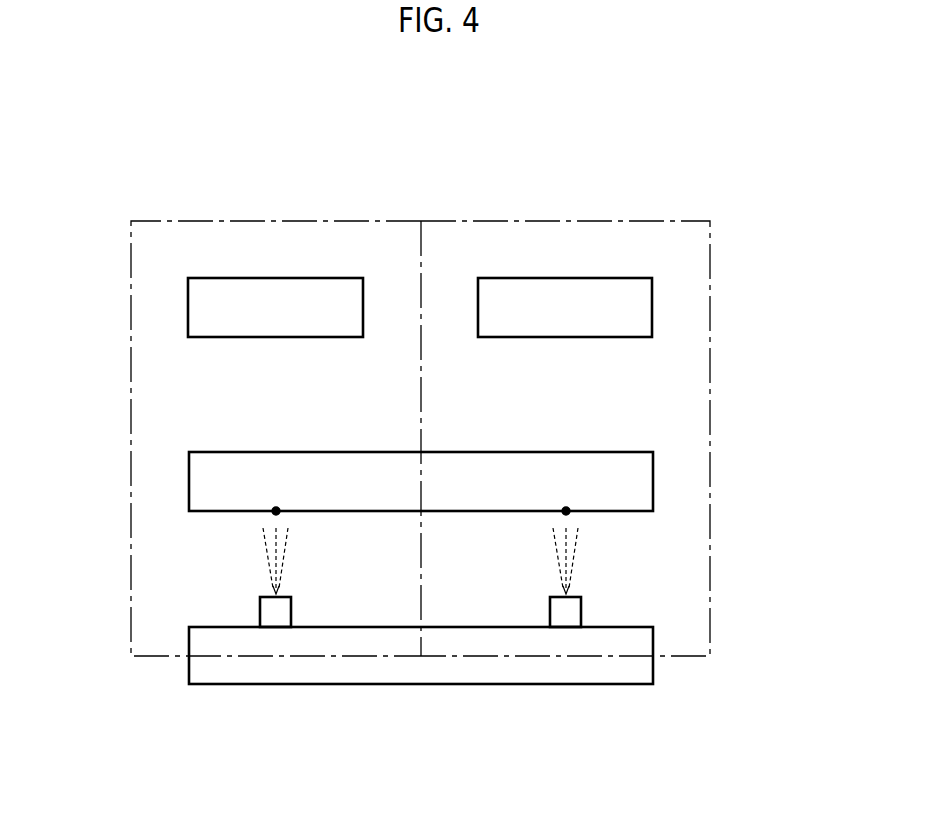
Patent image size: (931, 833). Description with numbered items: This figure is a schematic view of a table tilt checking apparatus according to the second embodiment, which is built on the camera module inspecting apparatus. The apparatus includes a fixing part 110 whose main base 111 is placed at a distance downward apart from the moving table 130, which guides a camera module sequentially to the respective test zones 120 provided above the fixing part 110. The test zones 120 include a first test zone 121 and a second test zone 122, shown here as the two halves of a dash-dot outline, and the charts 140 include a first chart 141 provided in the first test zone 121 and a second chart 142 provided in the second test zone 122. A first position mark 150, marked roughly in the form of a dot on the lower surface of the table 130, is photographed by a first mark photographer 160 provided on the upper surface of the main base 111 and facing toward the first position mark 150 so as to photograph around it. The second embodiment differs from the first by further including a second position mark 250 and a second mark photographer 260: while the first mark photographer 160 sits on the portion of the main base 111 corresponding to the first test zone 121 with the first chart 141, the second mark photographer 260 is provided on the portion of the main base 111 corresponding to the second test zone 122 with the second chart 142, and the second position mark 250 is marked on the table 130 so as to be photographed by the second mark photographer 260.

The fixing part 110 is at (421, 712).
The main base 111 is at (578, 684).
The test zones 120 is at (420, 385).
The first test zone 121 is at (620, 221).
The second test zone 122 is at (154, 221).
The moving table 130 is at (643, 477).
The charts 140 is at (444, 307).
The first chart 141 is at (652, 305).
The second chart 142 is at (188, 305).
The first position mark 150 is at (566, 511).
The first mark photographer 160 is at (573, 612).
The second position mark 250 is at (276, 511).
The second mark photographer 260 is at (268, 612).